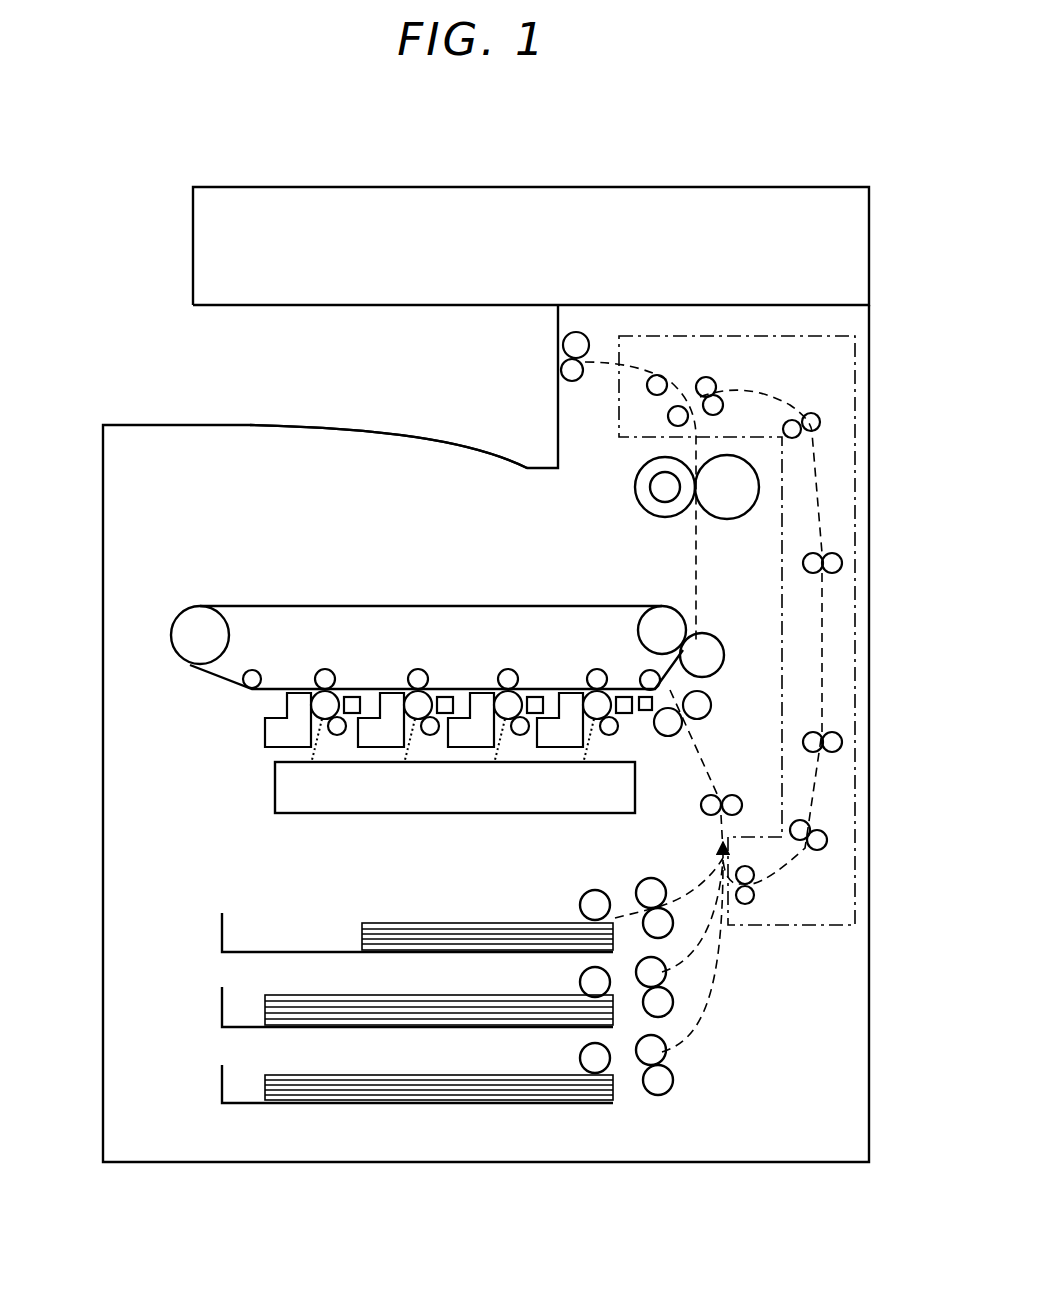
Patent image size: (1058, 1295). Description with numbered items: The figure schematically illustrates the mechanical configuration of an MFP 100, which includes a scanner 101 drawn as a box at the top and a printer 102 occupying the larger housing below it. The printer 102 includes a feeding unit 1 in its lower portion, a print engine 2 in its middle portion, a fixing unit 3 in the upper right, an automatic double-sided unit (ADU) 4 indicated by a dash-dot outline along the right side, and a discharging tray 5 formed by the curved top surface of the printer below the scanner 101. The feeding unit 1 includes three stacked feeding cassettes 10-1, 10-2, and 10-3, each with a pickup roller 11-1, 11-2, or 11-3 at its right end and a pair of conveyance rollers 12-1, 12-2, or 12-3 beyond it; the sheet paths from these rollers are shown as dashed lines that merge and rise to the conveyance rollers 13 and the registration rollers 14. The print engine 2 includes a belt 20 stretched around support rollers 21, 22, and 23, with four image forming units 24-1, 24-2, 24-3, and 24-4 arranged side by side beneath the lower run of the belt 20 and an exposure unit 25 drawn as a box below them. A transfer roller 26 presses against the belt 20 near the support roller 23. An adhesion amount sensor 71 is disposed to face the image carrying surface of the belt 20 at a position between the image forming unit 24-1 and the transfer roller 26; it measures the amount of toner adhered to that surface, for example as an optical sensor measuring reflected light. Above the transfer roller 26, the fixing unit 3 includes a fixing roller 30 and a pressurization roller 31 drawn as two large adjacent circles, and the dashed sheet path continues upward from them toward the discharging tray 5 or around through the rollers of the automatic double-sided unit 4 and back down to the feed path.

The MFP 100 is at (760, 152).
The scanner 101 is at (193, 247).
The printer 102 is at (103, 455).
The discharging tray 5 is at (432, 441).
The automatic double-sided unit (ADU) 4 is at (872, 392).
The fixing unit 3 is at (666, 503).
The fixing roller 30 is at (666, 513).
The pressurization roller 31 is at (727, 516).
The print engine 2 is at (301, 571).
The belt 20 is at (432, 605).
The support roller 21 is at (206, 624).
The support roller 22 is at (246, 690).
The support roller 23 is at (660, 612).
The transfer roller 26 is at (708, 641).
The image forming unit 24-1 is at (579, 680).
The image forming unit 24-2 is at (490, 679).
The image forming unit 24-3 is at (400, 678).
The image forming unit 24-4 is at (305, 677).
The exposure unit 25 is at (275, 790).
The adhesion amount sensor 71 is at (656, 716).
The registration rollers 14 is at (695, 728).
The conveyance rollers 13 is at (712, 792).
The feeding unit 1 is at (276, 893).
The feeding cassette 10-1 is at (222, 934).
The feeding cassette 10-2 is at (222, 1009).
The feeding cassette 10-3 is at (222, 1089).
The pickup roller 11-1 is at (580, 906).
The pickup roller 11-2 is at (580, 983).
The pickup roller 11-3 is at (580, 1059).
The conveyance rollers 12-1 is at (657, 908).
The conveyance rollers 12-2 is at (668, 1000).
The conveyance rollers 12-3 is at (668, 1080).